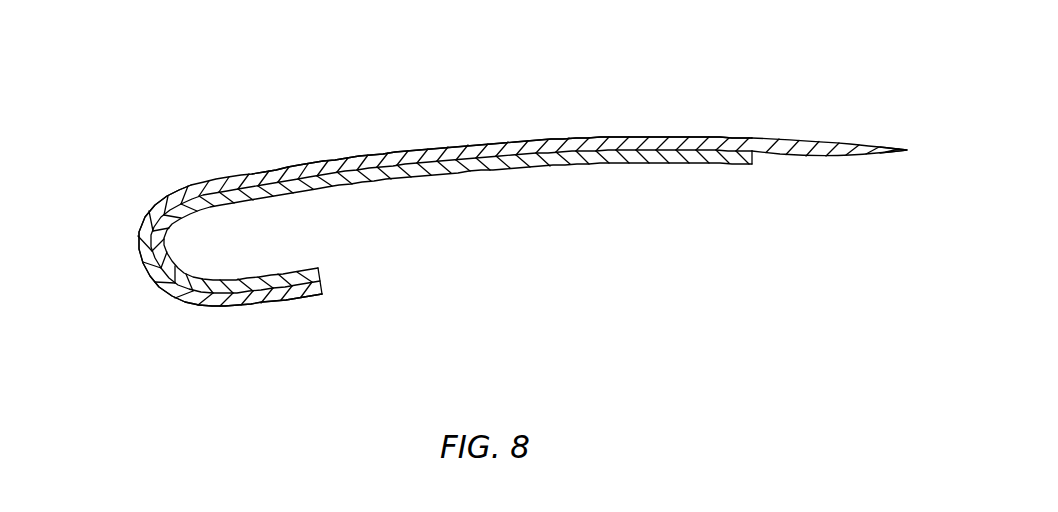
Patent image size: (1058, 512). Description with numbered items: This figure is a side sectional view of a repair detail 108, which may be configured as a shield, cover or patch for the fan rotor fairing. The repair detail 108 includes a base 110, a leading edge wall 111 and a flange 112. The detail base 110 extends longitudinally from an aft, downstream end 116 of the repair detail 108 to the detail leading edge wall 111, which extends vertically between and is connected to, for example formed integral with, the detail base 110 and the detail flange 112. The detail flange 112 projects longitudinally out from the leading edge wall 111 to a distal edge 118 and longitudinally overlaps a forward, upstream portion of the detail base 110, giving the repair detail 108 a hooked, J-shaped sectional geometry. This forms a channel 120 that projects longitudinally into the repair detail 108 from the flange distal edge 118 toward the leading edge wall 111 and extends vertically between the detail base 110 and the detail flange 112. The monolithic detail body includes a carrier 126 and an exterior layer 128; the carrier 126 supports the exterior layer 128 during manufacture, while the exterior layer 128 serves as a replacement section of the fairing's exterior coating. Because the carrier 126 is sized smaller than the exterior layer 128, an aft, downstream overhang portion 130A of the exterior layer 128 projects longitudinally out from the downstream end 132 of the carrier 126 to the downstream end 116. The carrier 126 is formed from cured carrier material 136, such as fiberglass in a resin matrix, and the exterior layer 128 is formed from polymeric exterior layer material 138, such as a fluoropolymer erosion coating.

The repair detail 108 is at (426, 176).
The base 110 is at (471, 136).
The leading edge wall 111 is at (126, 254).
The flange 112 is at (252, 323).
The downstream end 116 is at (907, 152).
The distal edge 118 is at (321, 280).
The channel 120 is at (290, 241).
The carrier 126 is at (450, 221).
The carrier material 136 is at (553, 162).
The exterior layer 128 is at (443, 181).
The exterior layer material 138 is at (628, 146).
The downstream overhang portion 130A is at (827, 140).
The downstream end of the carrier 132 is at (755, 165).